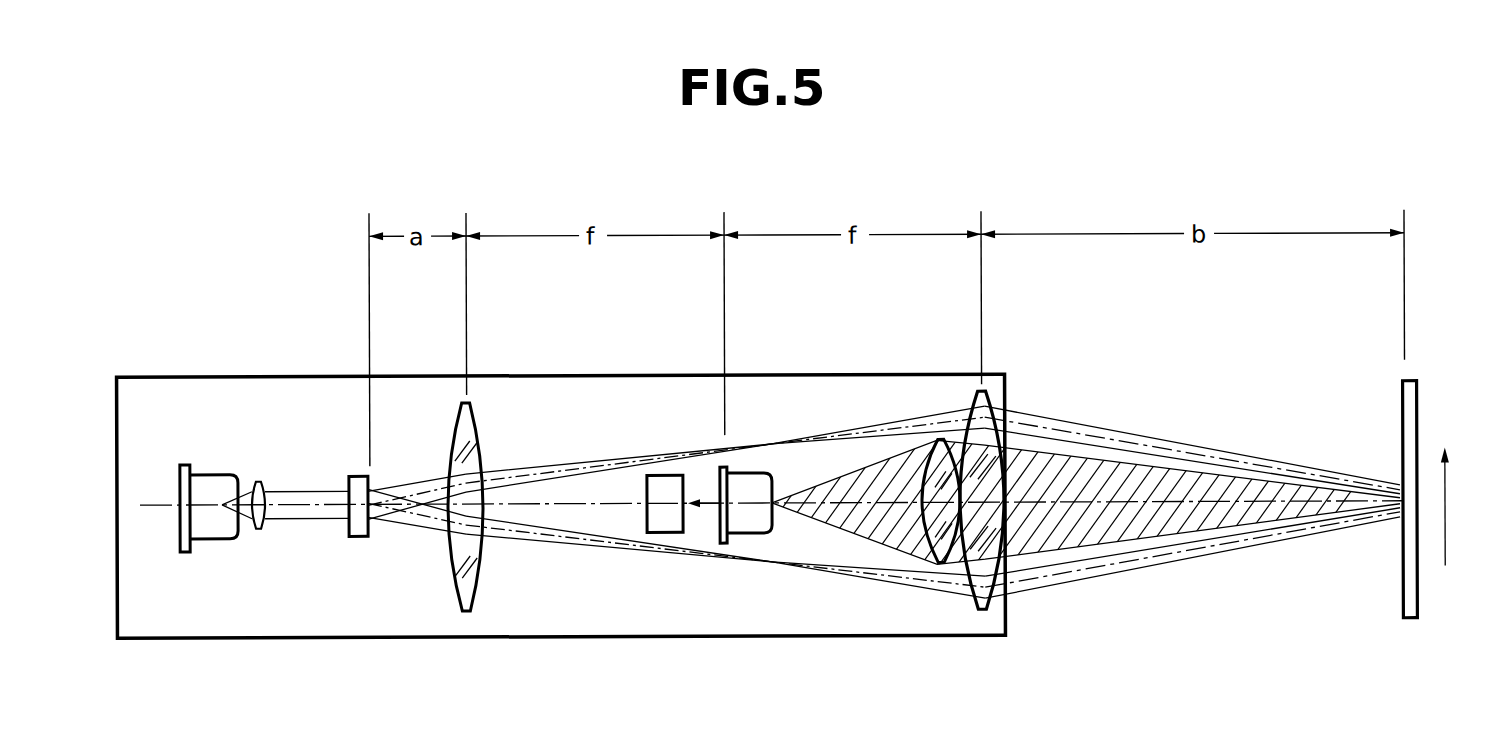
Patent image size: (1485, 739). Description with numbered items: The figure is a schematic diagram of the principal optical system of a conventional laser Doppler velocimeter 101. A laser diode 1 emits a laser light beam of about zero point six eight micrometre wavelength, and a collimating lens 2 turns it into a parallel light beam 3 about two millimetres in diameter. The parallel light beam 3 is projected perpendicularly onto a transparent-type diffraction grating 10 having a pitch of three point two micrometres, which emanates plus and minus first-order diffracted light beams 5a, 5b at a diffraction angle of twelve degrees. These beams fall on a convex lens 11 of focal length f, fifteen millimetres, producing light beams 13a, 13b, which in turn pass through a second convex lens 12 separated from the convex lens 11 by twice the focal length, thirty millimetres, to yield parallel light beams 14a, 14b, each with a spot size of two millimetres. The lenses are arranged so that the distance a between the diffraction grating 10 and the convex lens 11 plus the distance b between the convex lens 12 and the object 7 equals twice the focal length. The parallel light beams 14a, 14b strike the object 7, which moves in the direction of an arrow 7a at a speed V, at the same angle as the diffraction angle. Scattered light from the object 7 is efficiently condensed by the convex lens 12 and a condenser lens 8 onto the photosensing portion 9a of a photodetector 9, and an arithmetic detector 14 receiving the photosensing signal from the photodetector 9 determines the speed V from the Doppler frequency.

The laser Doppler velocimeter 101 is at (207, 395).
The laser diode 1 is at (215, 538).
The collimating lens 2 is at (262, 480).
The parallel light beam 3 is at (317, 508).
The diffraction grating 10 is at (352, 538).
The +1 order diffracted light beam 5a is at (425, 478).
The -1 order diffracted light beam 5b is at (388, 522).
The convex lens 11 is at (468, 612).
The light beam 13a is at (532, 470).
The light beam 13b is at (532, 540).
The arithmetic detector 14 is at (665, 533).
The photodetector 9 is at (757, 534).
The photosensing portion 9a is at (778, 445).
The condenser lens 8 is at (928, 563).
The convex lens 12 is at (982, 612).
The parallel light beam 14a is at (1112, 434).
The parallel light beam 14b is at (1150, 566).
The object to be measured 7 is at (1404, 605).
The arrow 7a is at (1445, 542).